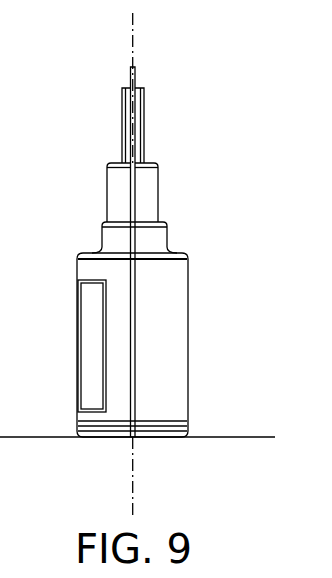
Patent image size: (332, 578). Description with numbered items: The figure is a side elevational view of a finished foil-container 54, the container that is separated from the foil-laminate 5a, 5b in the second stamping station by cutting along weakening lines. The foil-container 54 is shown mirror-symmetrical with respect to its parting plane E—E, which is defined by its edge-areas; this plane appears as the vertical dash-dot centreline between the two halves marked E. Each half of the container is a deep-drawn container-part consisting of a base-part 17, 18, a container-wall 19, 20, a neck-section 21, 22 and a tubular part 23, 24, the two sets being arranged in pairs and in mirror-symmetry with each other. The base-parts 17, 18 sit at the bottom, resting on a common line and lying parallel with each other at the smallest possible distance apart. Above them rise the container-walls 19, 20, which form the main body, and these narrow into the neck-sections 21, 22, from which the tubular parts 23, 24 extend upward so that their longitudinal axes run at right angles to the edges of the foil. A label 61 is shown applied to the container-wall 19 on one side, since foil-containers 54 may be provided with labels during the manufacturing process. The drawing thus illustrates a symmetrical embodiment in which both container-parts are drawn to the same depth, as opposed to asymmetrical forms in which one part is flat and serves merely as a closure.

The parting plane E— E is at (133, 27).
The foil-laminate 5a is at (127, 183).
The foil-laminate 5b is at (141, 200).
The base-part 17 is at (101, 441).
The base-part 18 is at (158, 441).
The container-wall 19 is at (92, 270).
The container-wall 20 is at (174, 321).
The neck-section 21 is at (120, 200).
The neck-section 22 is at (145, 182).
The tubular part 23 is at (123, 123).
The tubular part 24 is at (142, 123).
The foil-container 54 is at (199, 368).
The label 61 is at (90, 338).